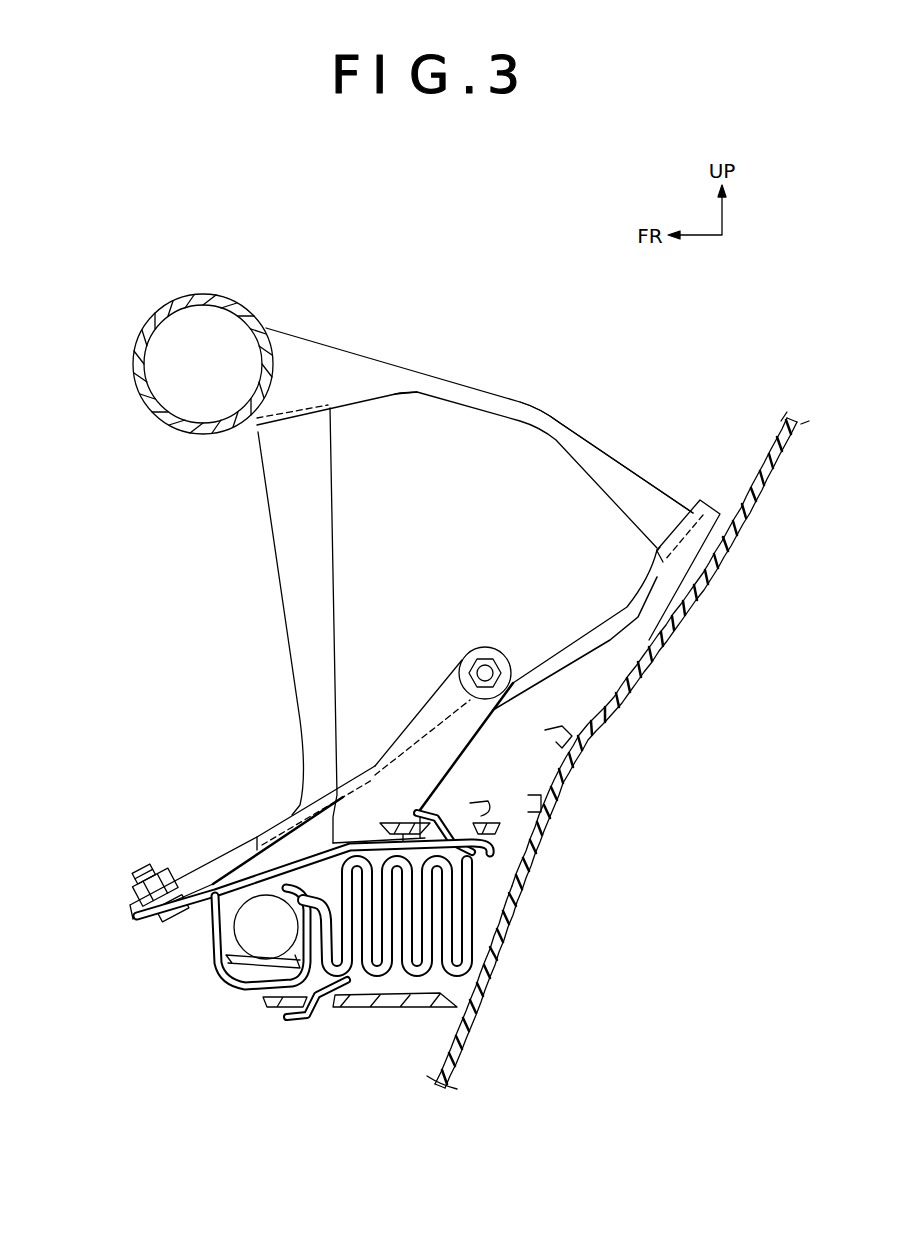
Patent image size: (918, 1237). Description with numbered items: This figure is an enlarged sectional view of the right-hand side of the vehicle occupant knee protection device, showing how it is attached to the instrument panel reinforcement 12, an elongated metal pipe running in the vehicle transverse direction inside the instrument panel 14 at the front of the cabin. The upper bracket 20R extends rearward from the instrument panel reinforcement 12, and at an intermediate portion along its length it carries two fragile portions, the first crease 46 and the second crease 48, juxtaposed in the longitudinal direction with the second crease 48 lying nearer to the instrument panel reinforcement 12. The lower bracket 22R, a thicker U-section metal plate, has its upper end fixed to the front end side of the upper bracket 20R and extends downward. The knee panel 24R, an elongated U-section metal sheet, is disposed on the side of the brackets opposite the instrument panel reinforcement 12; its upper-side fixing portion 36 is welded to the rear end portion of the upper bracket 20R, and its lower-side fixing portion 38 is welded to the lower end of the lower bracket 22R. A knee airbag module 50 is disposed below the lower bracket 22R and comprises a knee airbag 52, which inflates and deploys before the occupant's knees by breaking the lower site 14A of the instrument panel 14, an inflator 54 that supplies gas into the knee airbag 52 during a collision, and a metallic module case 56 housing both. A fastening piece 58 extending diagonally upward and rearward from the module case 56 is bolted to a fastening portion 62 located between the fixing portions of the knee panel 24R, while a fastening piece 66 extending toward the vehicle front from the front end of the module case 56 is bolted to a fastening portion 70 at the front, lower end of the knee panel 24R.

The instrument panel reinforcement 12 is at (205, 293).
The instrument panel 14 is at (607, 718).
The lower site 14A is at (494, 953).
The upper bracket 20R is at (511, 390).
The lower bracket 22R is at (283, 640).
The knee panel 24R is at (572, 640).
The upper-side fixing portion 36 is at (690, 553).
The lower-side fixing portion 38 is at (287, 822).
The first crease 46 is at (556, 438).
The second crease 48 is at (400, 393).
The knee airbag module 50 is at (218, 976).
The knee airbag 52 is at (383, 990).
The inflator 54 is at (250, 1000).
The module case 56 is at (228, 872).
The fastening piece 58 is at (430, 688).
The fastening portion 62 is at (485, 648).
The fastening piece 66 is at (142, 930).
The fastening portion 70 is at (137, 903).